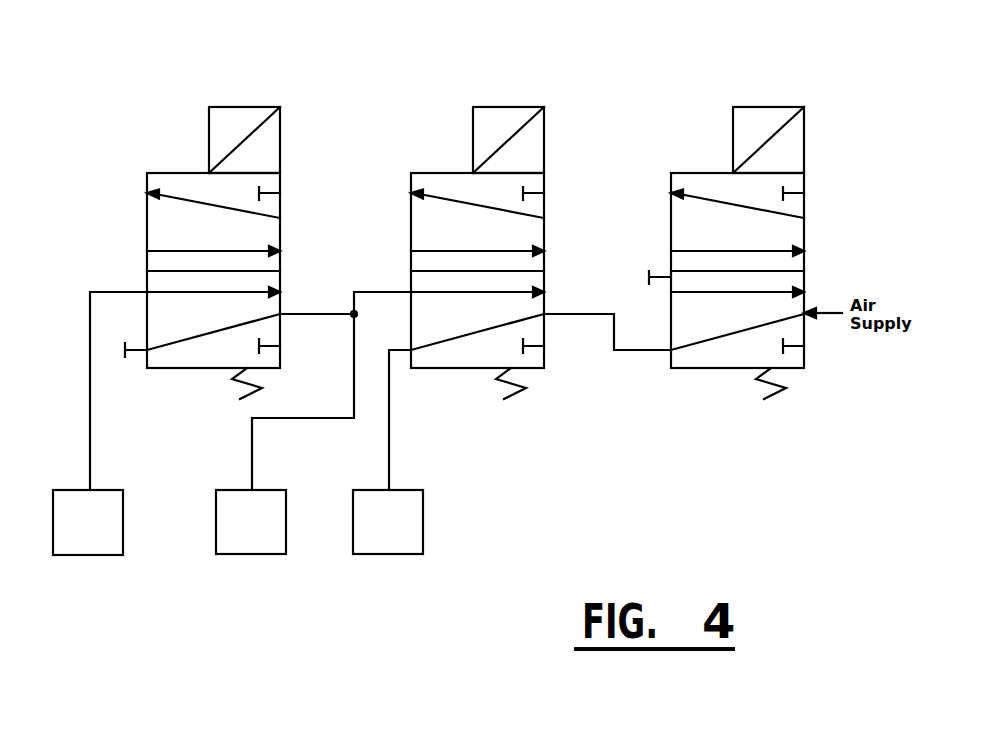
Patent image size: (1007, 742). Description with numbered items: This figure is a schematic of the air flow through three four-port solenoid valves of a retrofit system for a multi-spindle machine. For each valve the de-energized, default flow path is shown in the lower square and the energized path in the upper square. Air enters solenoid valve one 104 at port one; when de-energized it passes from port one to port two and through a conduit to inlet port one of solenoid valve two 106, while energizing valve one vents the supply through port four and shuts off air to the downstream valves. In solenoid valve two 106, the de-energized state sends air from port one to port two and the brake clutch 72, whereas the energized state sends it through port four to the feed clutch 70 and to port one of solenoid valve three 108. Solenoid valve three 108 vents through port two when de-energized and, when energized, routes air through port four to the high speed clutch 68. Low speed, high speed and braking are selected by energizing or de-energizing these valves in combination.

The solenoid valve one 104 is at (773, 107).
The solenoid valve two 106 is at (502, 107).
The solenoid valve three 108 is at (252, 107).
The high speed clutch 68 is at (77, 555).
The feed clutch 70 is at (235, 554).
The brake clutch 72 is at (387, 554).